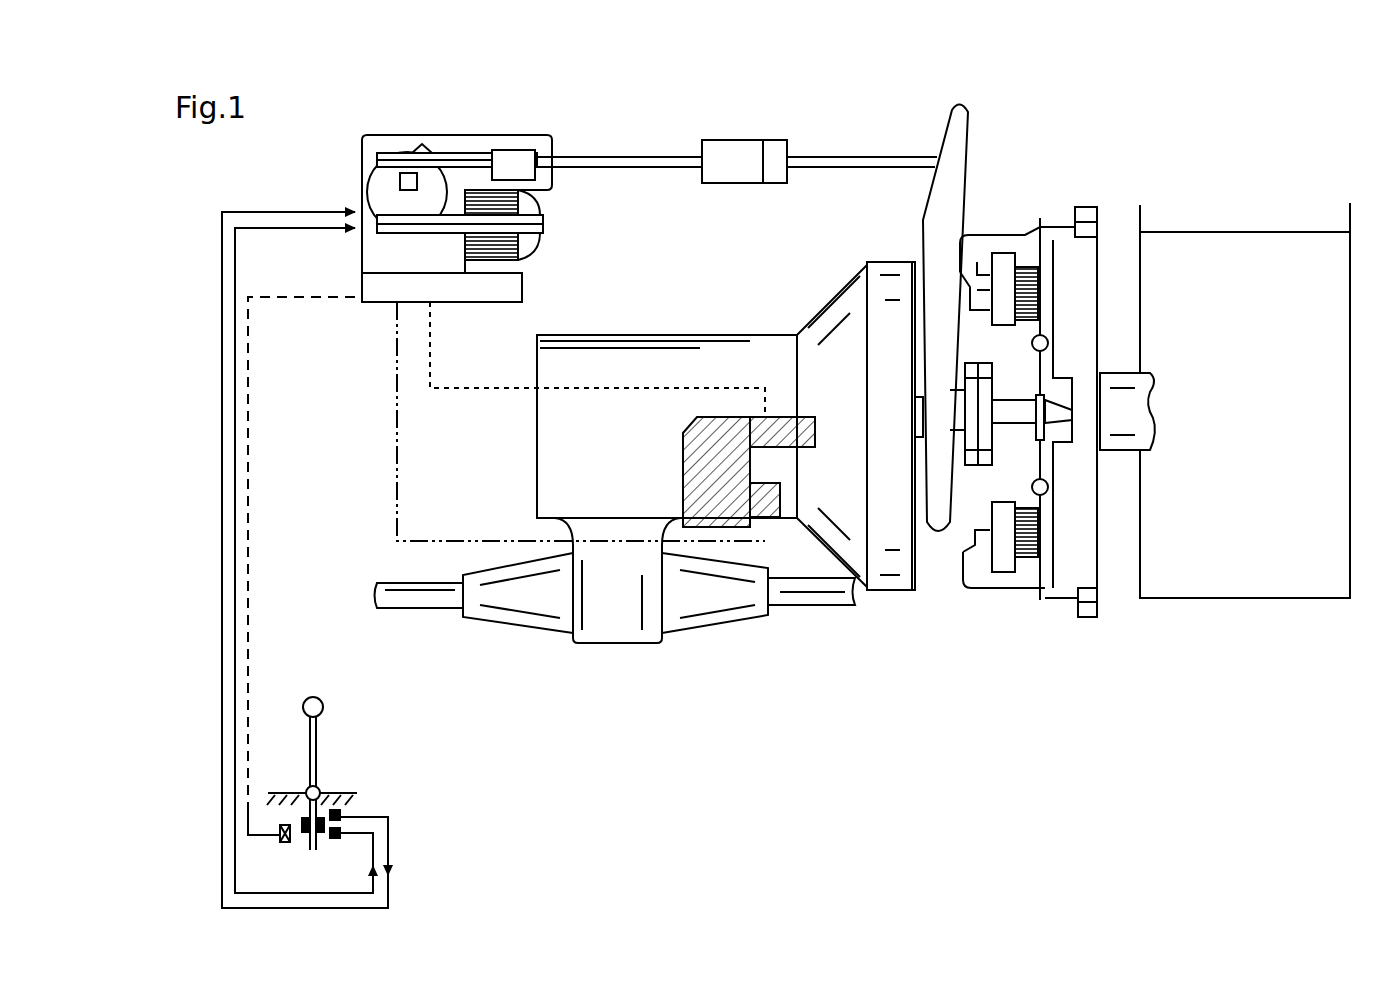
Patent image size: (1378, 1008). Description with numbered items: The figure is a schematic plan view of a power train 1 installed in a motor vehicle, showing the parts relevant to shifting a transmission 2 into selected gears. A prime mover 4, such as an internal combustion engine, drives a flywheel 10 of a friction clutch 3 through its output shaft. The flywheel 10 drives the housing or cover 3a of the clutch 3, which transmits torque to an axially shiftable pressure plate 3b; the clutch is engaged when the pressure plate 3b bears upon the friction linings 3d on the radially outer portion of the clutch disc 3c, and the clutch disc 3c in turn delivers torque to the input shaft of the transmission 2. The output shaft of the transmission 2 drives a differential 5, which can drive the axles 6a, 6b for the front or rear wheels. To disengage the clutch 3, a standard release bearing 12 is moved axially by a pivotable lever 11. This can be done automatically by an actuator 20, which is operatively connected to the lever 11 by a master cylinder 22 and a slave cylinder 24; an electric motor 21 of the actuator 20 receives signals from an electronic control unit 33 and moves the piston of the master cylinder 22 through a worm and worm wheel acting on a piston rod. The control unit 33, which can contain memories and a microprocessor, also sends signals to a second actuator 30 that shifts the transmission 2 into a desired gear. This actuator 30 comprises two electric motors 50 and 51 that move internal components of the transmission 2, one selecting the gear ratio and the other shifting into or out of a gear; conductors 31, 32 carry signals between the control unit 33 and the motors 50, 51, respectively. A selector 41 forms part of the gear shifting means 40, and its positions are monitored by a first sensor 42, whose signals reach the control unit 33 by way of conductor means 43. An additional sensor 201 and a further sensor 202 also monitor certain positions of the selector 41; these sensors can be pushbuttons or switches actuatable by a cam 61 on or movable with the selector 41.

The power train 1 is at (1158, 124).
The transmission 2 is at (683, 365).
The friction clutch 3 is at (1037, 168).
The housing or cover 3a is at (987, 234).
The pressure plate 3b is at (1003, 555).
The clutch disc 3c is at (1040, 363).
The friction linings 3d is at (1028, 557).
The prime mover 4 is at (1170, 327).
The differential 5 is at (622, 612).
The axle 6a is at (397, 603).
The axle 6b is at (793, 590).
The flywheel 10 is at (1080, 260).
The pivotable lever 11 is at (955, 145).
The release bearing 12 is at (972, 468).
The actuator 20 is at (443, 158).
The electric motor 21 is at (527, 205).
The master cylinder 22 is at (503, 152).
The slave cylinder 24 is at (770, 158).
The second actuator 30 is at (722, 520).
The conductor 31 is at (468, 388).
The conductor 32 is at (437, 543).
The electronic control unit 33 is at (380, 292).
The gear shifting means 40 is at (375, 738).
The selector 41 is at (315, 702).
The first sensor 42 is at (284, 843).
The conductor means 43 is at (249, 478).
The electric motor 50 is at (780, 430).
The electric motor 51 is at (773, 497).
The cam 61 is at (300, 822).
The additional sensor 201 is at (342, 814).
The further sensor 202 is at (342, 832).